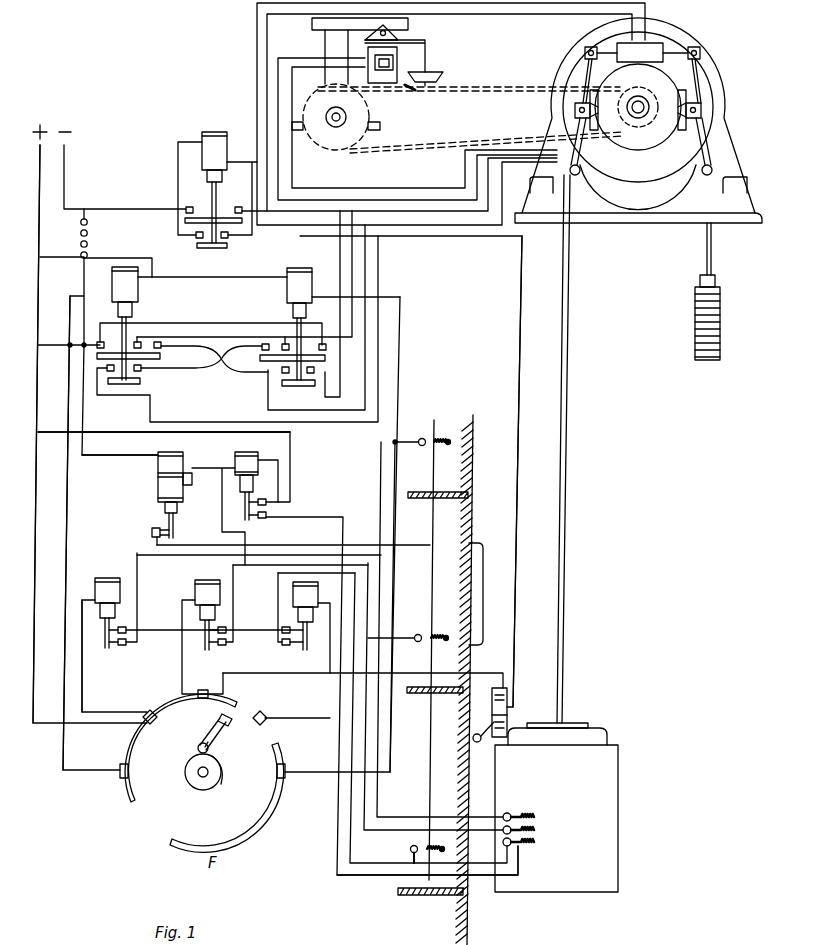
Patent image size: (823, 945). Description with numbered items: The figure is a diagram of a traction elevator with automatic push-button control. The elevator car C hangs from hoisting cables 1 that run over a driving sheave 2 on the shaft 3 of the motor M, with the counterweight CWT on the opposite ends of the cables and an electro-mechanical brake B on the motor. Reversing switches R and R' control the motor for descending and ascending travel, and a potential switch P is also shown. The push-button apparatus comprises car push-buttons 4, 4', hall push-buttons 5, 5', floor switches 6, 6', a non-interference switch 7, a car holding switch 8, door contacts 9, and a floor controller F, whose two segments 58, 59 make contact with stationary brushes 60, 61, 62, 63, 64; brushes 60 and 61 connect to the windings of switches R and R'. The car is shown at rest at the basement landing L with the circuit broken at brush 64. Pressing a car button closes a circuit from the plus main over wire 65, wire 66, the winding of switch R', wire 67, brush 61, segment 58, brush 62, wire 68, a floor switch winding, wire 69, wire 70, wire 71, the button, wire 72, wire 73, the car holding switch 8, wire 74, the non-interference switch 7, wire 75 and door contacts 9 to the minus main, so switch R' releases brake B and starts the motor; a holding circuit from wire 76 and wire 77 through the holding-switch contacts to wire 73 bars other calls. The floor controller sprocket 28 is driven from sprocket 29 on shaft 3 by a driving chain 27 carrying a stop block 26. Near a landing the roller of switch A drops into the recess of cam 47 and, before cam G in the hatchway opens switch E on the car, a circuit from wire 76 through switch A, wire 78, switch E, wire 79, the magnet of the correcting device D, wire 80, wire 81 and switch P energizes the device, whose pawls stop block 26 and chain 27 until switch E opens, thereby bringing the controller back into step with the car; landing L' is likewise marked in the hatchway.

The hoisting cables 1 is at (569, 478).
The driving sheave 2 is at (710, 112).
The shaft 3 is at (662, 107).
The car push-button 4 is at (536, 834).
The car push-button 4' is at (537, 815).
The hall push-button 5 is at (415, 846).
The hall push-button 5' is at (429, 619).
The floor switch 6 is at (307, 623).
The floor switch 6' is at (207, 625).
The non-interference switch 7 is at (158, 478).
The car holding switch 8 is at (256, 465).
The door contacts 9 is at (90, 228).
The stop block 26 is at (413, 88).
The driving chain 27 is at (505, 92).
The sprocket 28 is at (355, 117).
The sprocket 29 is at (656, 98).
The cam 47 is at (196, 786).
The segment 58 is at (130, 795).
The segment 59 is at (255, 822).
The brush 60 is at (284, 763).
The brush 61 is at (120, 766).
The brush 62 is at (150, 710).
The brush 63 is at (204, 690).
The brush 64 is at (265, 712).
The wire 65 is at (118, 257).
The wire 66 is at (170, 275).
The wire 67 is at (70, 310).
The wire 68 is at (85, 688).
The wire 69 is at (124, 578).
The wire 70 is at (140, 576).
The wire 71 is at (385, 590).
The wire 72 is at (522, 873).
The wire 73 is at (290, 482).
The wire 74 is at (218, 455).
The wire 75 is at (125, 458).
The wire 76 is at (38, 400).
The wire 77 is at (105, 430).
The wire 78 is at (255, 673).
The wire 79 is at (520, 656).
The wire 80 is at (296, 178).
The wire 81 is at (305, 233).
The switch A is at (222, 733).
The electro-mechanical brake B is at (660, 48).
The elevator car C is at (612, 802).
The counterweight CWT is at (716, 330).
The correcting device D is at (408, 55).
The switch E is at (501, 715).
The floor controller F is at (350, 74).
The cam G is at (482, 603).
The basement landing L is at (431, 916).
The bracket L' is at (434, 708).
The motor M is at (722, 115).
The potential switch P is at (215, 138).
The reversing switch R is at (324, 327).
The reversing switch R' is at (136, 325).